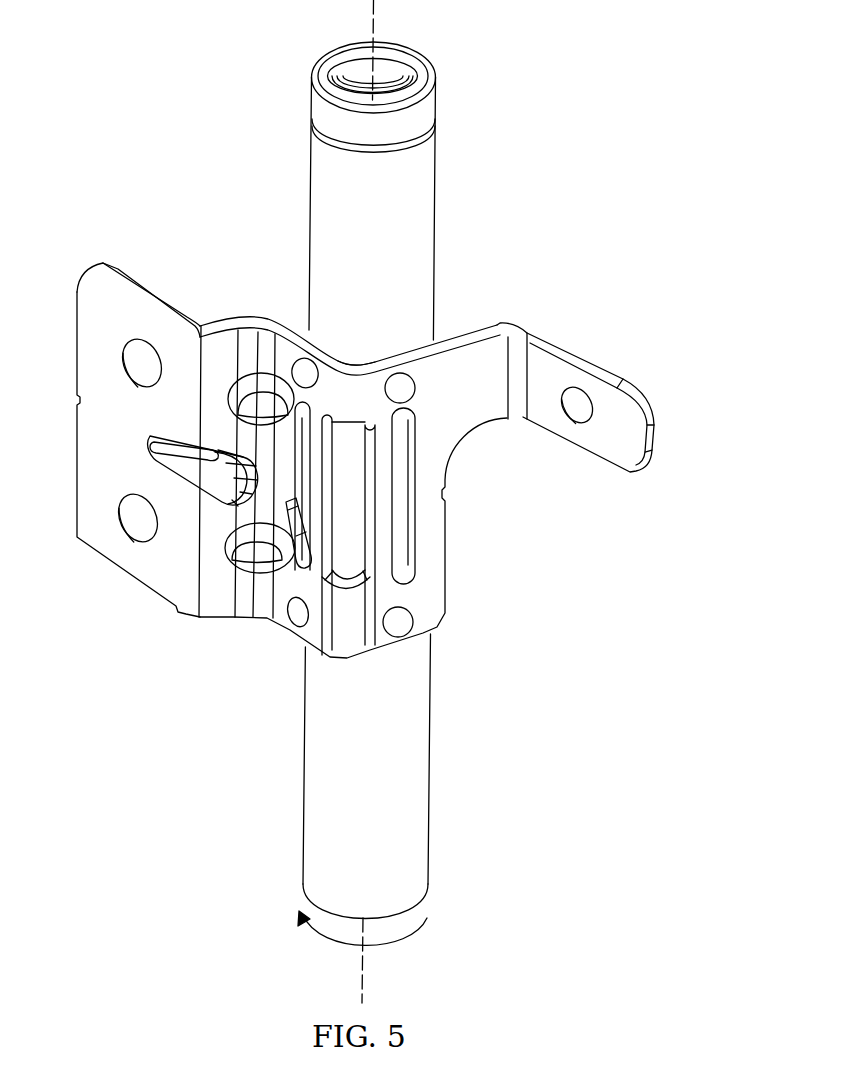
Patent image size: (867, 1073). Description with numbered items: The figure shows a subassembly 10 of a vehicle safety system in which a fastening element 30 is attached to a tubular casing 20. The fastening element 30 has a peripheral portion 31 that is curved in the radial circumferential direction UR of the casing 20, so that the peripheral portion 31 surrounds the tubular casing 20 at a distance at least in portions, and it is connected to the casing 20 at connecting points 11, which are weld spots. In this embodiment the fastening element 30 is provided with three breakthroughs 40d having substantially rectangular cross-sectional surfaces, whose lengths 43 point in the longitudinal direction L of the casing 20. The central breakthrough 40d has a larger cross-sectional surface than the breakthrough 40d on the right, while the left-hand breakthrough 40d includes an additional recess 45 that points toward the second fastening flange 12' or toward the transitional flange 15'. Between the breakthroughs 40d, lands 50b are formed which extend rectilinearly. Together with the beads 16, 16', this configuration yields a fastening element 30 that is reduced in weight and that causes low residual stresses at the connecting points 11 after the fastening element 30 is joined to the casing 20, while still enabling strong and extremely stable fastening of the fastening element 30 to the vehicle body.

The subassembly 10 is at (197, 74).
The connecting points 11 is at (302, 367).
The second fastening flange 12' is at (121, 435).
The transitional flange 15' is at (228, 453).
The bead 16 is at (232, 514).
The bead 16' is at (179, 469).
The tubular casing 20 is at (438, 204).
The fastening element 30 is at (551, 362).
The peripheral portion 31 is at (353, 357).
The breakthroughs 40d is at (423, 560).
The lengths 43 is at (330, 455).
The additional recess 45 is at (284, 490).
The lands 50b is at (313, 463).
The longitudinal direction L is at (375, 6).
The radial circumferential direction UR is at (425, 920).